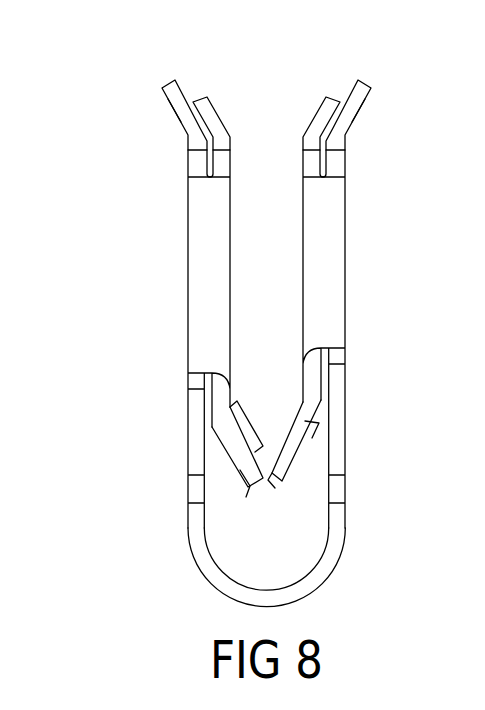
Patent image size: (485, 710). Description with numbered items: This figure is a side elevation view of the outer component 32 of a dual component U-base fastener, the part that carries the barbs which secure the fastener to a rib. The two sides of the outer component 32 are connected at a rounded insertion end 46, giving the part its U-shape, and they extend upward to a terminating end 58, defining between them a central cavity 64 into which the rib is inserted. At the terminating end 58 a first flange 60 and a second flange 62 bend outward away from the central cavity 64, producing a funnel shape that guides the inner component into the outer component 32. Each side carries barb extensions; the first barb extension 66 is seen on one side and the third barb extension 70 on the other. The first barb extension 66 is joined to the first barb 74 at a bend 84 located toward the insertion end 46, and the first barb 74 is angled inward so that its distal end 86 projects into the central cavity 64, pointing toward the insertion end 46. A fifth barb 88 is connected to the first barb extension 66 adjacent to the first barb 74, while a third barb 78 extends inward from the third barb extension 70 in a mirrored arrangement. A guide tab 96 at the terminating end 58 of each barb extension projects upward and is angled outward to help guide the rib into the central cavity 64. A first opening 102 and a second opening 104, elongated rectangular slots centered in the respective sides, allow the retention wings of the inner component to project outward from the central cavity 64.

The outer component 32 is at (110, 102).
The terminating end 58 is at (168, 86).
The first flange 60 is at (175, 112).
The second flange 62 is at (358, 112).
The central cavity 64 is at (265, 135).
The first barb extension 66 is at (222, 200).
The third barb extension 70 is at (310, 232).
The first barb 74 is at (247, 478).
The third barb 78 is at (290, 418).
The bend 84 is at (205, 177).
The distal end 86 is at (260, 482).
The fifth barb 88 is at (243, 430).
The guide tab 96 is at (214, 113).
The first opening 102 is at (151, 343).
The second opening 104 is at (375, 373).
The insertion end 46 is at (268, 597).